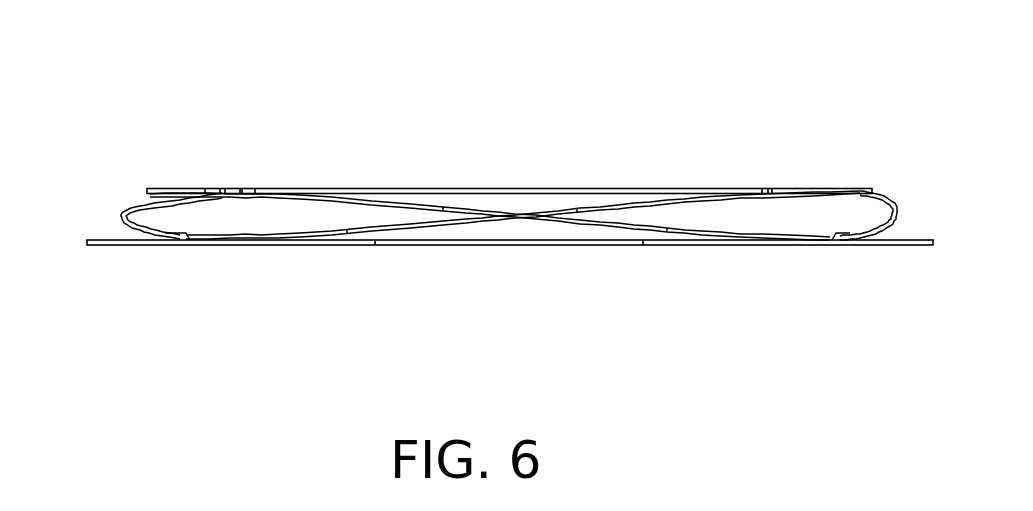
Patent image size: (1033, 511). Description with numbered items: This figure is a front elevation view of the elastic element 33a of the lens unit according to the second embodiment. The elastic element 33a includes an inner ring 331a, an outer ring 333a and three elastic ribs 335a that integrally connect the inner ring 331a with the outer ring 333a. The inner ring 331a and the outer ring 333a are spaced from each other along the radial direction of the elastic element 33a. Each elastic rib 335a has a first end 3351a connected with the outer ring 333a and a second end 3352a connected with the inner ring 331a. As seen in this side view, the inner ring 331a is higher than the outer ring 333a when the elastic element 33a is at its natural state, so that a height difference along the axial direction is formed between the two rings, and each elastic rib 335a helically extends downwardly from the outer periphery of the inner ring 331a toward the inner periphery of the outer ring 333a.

The elastic element 33a is at (479, 50).
The inner ring 331a is at (165, 190).
The outer ring 333a is at (113, 246).
The elastic rib 335a is at (122, 216).
The first end 3351a is at (172, 240).
The second end 3352a is at (205, 190).